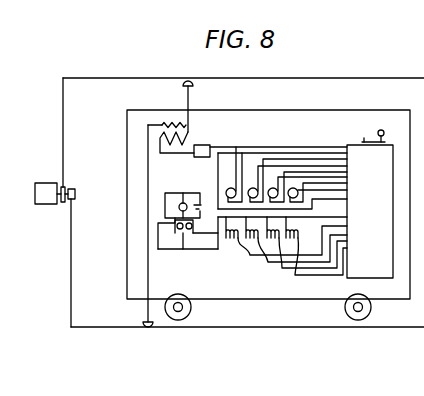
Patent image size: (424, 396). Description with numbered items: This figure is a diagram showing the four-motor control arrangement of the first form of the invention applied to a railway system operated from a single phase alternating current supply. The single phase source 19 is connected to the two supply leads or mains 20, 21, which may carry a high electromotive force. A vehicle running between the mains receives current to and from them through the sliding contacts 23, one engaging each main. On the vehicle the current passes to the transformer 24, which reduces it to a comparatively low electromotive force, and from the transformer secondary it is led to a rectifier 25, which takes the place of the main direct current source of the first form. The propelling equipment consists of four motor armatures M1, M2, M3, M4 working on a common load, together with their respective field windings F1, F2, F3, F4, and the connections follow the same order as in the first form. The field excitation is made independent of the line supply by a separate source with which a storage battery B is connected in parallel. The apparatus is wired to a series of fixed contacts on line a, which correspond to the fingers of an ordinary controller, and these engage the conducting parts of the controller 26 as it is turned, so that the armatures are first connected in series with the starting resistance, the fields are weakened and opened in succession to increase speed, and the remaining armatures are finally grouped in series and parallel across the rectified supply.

The single phase source 19 is at (55, 193).
The supply lead or main 20 is at (243, 71).
The supply lead or main 21 is at (271, 329).
The sliding contacts 23 is at (193, 87).
The transformer 24 is at (166, 131).
The rectifier 25 is at (270, 142).
The controller 26 is at (370, 204).
The motor armature M1 is at (230, 188).
The motor armature M2 is at (252, 188).
The motor armature M3 is at (273, 188).
The motor armature M4 is at (293, 188).
The field winding F1 is at (286, 235).
The field winding F2 is at (296, 239).
The field winding F3 is at (307, 242).
The field winding F4 is at (316, 245).
The storage battery B is at (188, 204).
The line of contacts a is at (188, 233).